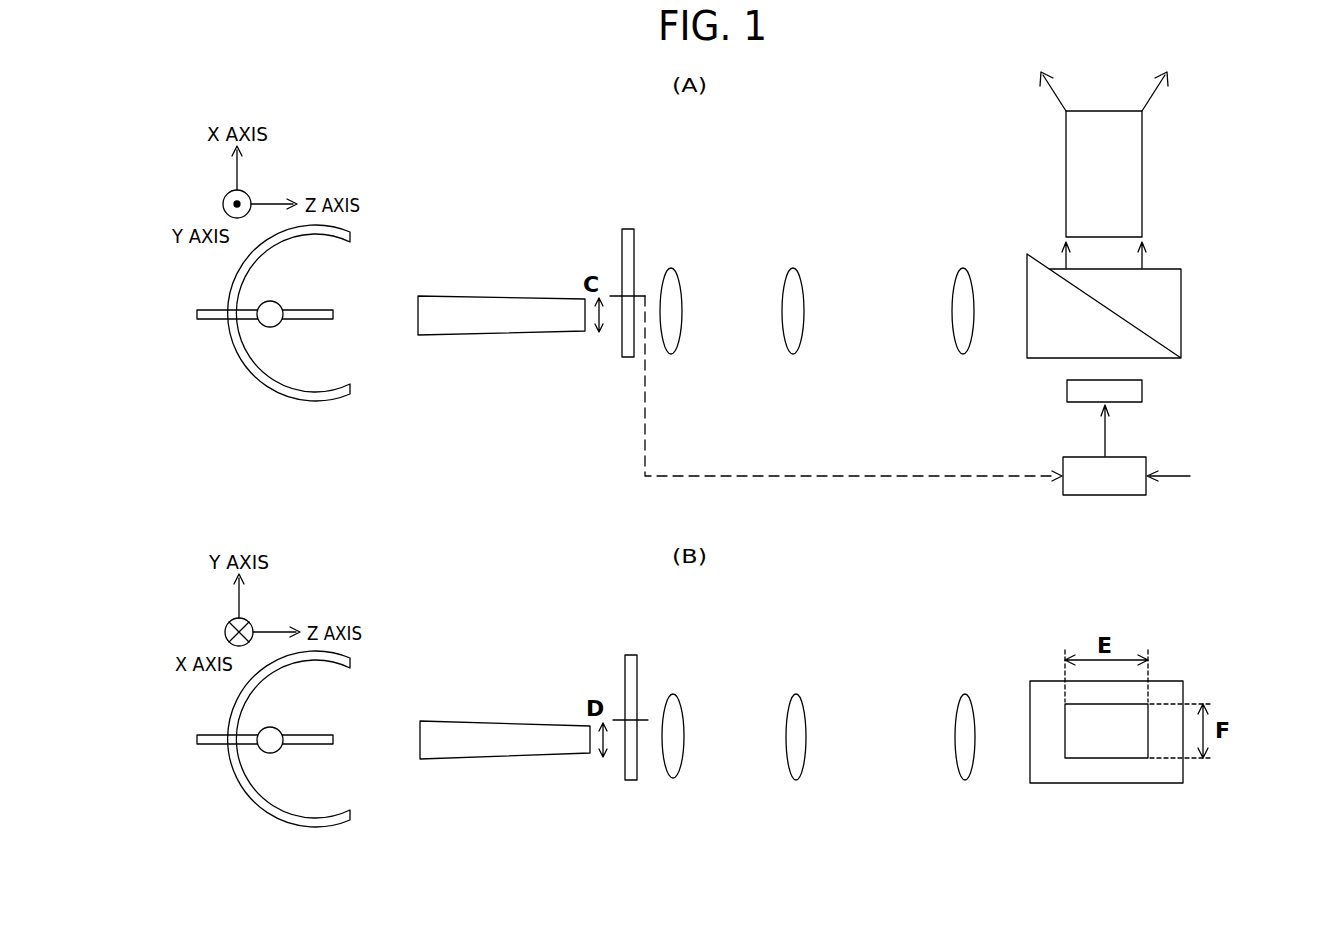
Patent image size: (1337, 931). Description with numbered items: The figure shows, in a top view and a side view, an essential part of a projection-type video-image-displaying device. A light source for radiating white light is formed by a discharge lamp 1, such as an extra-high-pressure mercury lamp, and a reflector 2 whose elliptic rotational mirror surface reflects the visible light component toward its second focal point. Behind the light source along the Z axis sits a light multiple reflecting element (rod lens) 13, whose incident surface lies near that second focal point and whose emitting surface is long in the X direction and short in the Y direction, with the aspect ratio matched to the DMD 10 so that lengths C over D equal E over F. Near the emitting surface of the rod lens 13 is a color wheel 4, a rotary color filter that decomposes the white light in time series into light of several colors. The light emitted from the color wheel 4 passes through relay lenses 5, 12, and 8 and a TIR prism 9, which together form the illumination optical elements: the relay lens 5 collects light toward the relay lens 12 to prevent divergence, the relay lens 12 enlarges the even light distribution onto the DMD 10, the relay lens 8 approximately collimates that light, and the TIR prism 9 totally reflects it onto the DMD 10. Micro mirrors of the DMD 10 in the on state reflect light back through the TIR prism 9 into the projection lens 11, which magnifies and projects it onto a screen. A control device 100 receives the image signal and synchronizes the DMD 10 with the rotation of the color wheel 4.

The discharge lamp 1 is at (270, 318).
The reflector 2 is at (308, 395).
The color wheel 4 is at (628, 357).
The relay lens 5 is at (672, 352).
The relay lens 8 is at (964, 352).
The TIR prism 9 is at (1045, 350).
The DMD 10 is at (1085, 396).
The projection lens 11 is at (1075, 170).
The relay lens 12 is at (795, 352).
The light multiple reflecting element (rod lens) 13 is at (500, 323).
The control device 100 is at (1102, 478).